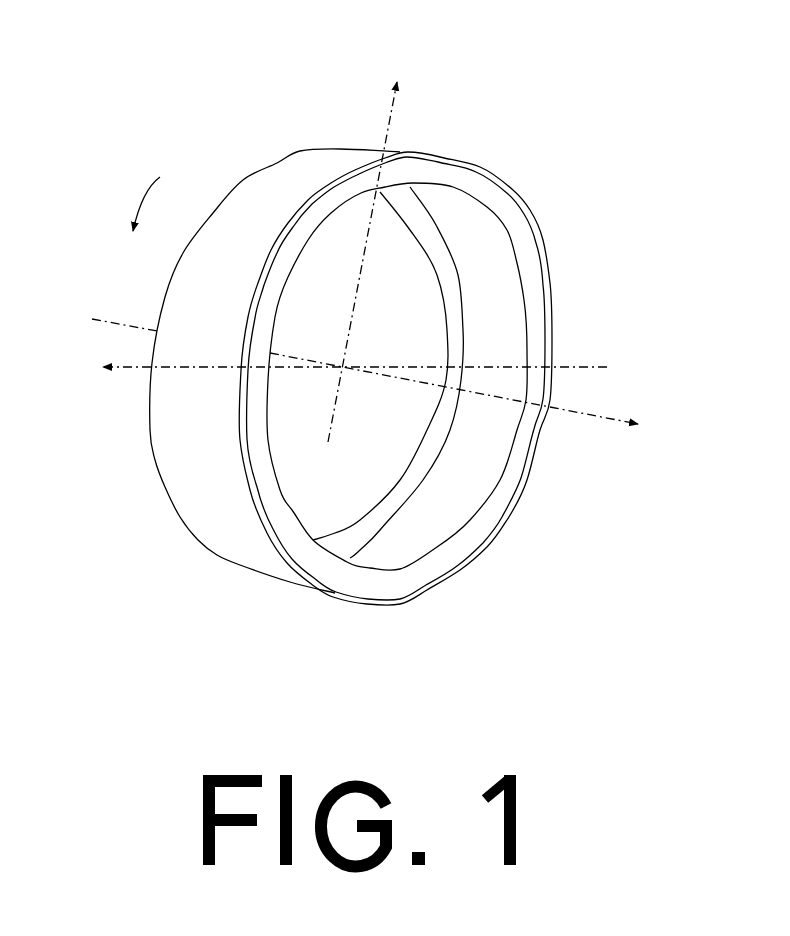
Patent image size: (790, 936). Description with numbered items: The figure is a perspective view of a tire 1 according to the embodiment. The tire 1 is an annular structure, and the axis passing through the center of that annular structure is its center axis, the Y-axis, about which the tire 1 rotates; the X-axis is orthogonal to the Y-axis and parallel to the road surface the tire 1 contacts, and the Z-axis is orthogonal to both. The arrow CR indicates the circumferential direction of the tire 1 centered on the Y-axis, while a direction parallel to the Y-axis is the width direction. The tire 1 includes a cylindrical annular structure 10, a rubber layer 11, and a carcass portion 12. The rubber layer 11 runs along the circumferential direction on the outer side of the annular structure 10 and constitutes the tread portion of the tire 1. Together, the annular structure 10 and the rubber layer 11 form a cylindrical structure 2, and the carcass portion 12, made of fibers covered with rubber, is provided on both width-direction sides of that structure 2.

The tire 1 is at (370, 347).
The cylindrical structure 2 is at (351, 308).
The annular structure 10 is at (482, 283).
The rubber layer 11 is at (262, 193).
The carcass portion 12 is at (351, 543).